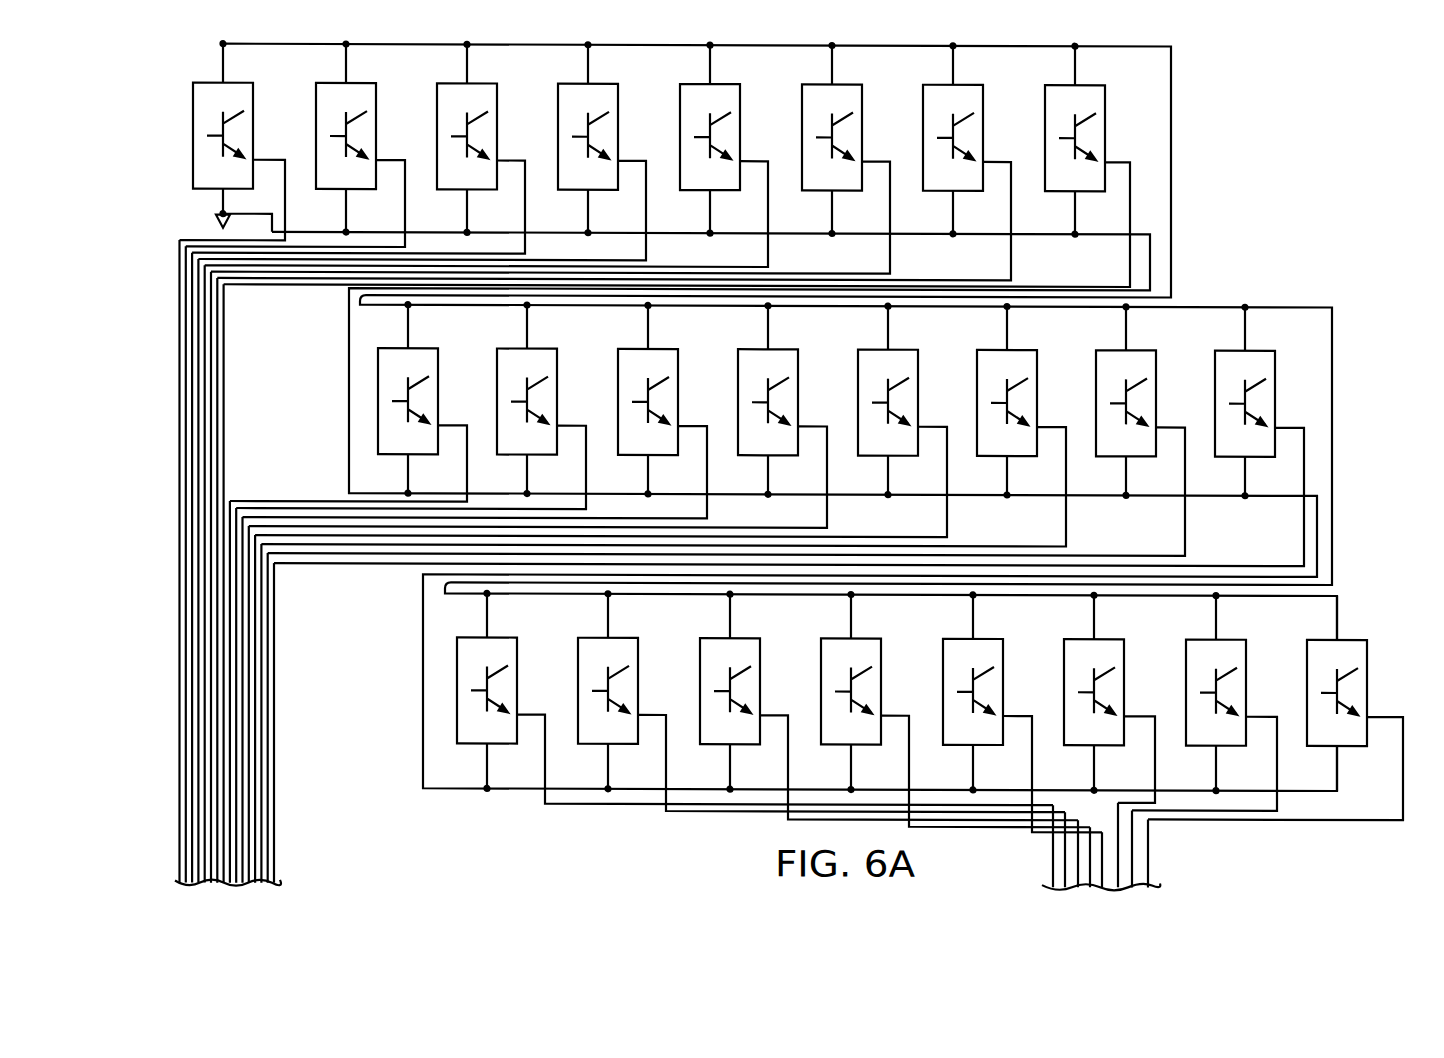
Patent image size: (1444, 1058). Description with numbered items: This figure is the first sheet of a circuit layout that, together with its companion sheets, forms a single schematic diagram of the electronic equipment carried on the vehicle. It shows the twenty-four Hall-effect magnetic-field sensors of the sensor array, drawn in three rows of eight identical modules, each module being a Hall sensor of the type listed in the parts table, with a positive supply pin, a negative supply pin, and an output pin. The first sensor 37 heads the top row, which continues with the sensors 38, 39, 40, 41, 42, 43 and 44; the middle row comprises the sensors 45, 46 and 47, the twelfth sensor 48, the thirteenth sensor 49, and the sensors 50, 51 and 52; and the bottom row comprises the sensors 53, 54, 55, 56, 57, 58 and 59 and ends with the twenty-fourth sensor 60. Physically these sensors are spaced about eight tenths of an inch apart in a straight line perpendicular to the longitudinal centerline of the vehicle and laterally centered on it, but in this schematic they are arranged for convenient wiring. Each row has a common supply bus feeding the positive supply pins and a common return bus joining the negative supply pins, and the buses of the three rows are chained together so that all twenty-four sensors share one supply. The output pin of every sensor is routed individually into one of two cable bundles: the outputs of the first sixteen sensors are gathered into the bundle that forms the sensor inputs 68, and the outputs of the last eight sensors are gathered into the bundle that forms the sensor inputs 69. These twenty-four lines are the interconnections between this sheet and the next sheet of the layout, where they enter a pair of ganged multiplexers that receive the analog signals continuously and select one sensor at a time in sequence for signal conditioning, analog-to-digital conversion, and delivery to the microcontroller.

The first sensor 37 is at (234, 140).
The Hall sensor 38 is at (298, 144).
The Hall sensor 39 is at (362, 147).
The Hall sensor 40 is at (425, 150).
The Hall sensor 41 is at (490, 154).
The Hall sensor 42 is at (554, 157).
The Hall sensor 43 is at (617, 160).
The Hall sensor 44 is at (682, 164).
The Hall sensor 45 is at (351, 402).
The Hall sensor 46 is at (414, 405).
The Hall sensor 47 is at (478, 410).
The twelfth sensor 48 is at (541, 415).
The thirteenth sensor 49 is at (604, 419).
The Hall sensor 50 is at (666, 424).
The Hall sensor 51 is at (729, 429).
The Hall sensor 52 is at (792, 434).
The Hall sensor 53 is at (755, 698).
The Hall sensor 54 is at (821, 701).
The Hall sensor 55 is at (889, 706).
The Hall sensor 56 is at (955, 709).
The Hall sensor 57 is at (1022, 712).
The Hall sensor 58 is at (1111, 698).
The Hall sensor 59 is at (1206, 702).
The twenty-fourth sensor 60 is at (1277, 707).
The sensor inputs 68 is at (168, 738).
The sensor inputs 69 is at (1047, 844).